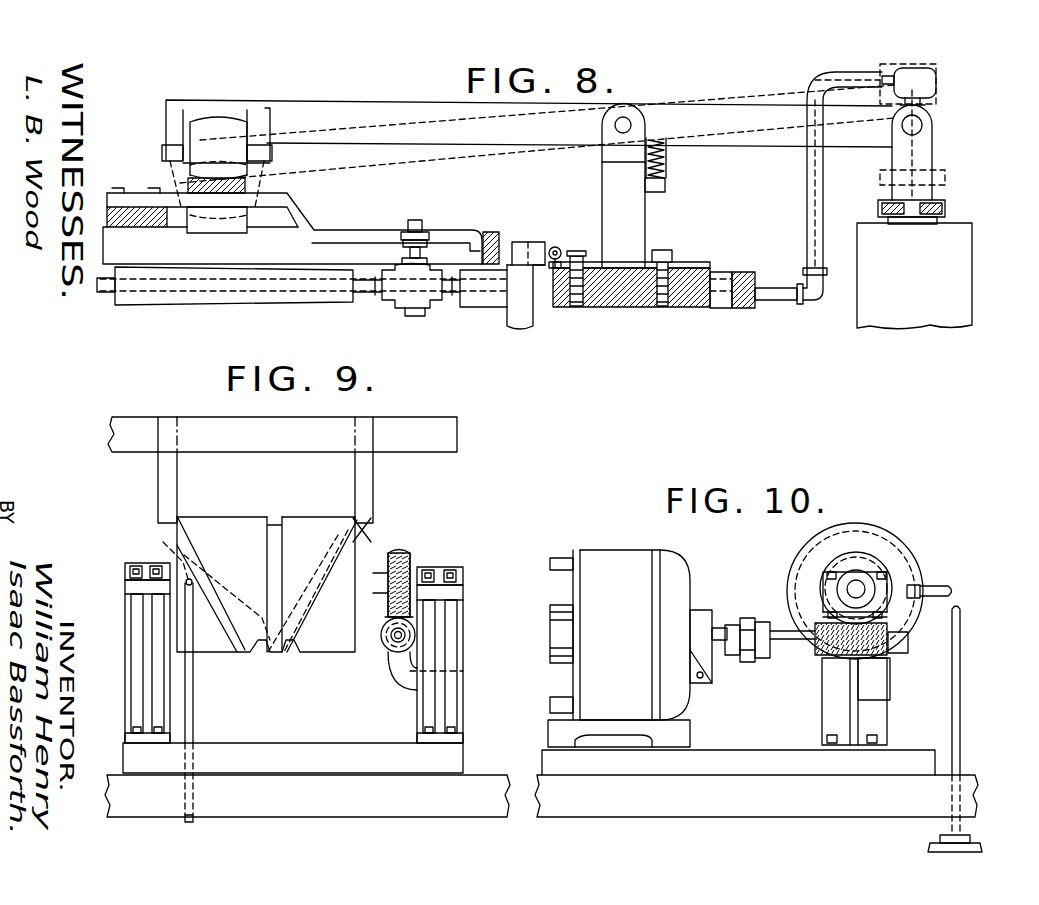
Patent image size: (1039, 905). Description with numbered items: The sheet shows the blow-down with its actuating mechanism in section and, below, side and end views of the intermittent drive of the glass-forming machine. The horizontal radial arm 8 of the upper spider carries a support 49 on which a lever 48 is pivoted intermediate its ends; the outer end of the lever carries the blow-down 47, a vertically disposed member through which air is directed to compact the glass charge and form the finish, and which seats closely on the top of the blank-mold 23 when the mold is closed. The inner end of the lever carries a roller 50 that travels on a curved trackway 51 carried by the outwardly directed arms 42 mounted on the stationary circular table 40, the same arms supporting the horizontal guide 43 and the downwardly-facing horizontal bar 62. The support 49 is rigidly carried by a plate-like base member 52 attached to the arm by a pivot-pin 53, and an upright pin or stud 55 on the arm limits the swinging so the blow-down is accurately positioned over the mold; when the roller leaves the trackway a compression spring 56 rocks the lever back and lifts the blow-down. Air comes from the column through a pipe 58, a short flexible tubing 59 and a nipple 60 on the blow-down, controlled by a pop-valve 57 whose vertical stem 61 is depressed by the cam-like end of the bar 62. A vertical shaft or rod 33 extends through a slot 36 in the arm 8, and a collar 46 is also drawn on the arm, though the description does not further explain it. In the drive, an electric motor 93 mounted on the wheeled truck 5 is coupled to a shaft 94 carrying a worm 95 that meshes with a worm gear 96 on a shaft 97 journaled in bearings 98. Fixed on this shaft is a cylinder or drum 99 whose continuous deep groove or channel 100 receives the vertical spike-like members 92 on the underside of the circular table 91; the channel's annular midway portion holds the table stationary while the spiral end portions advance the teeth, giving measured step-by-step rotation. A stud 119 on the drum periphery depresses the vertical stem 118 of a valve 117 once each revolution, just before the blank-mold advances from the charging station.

In FIG. 9, the wheeled truck 5 is at (500, 788).
In FIG. 8, the horizontal radial arm 8 is at (262, 303).
In FIG. 8, the blank-mold 23 is at (960, 281).
In FIG. 8, the vertical shaft or rod 33 is at (519, 327).
In FIG. 8, the slot 36 is at (556, 246).
In FIG. 8, the circular table 40 is at (134, 208).
In FIG. 8, the outwardly directed arms 42 is at (352, 232).
In FIG. 8, the horizontal guide 43 is at (491, 232).
In FIG. 8, the collar 46 is at (536, 246).
In FIG. 8, the blow-down 47 is at (933, 157).
In FIG. 8, the lever 48 is at (760, 138).
In FIG. 8, the support 49 is at (602, 184).
In FIG. 8, the roller 50 is at (192, 133).
In FIG. 8, the curved trackway 51 is at (248, 186).
In FIG. 8, the plate-like base member 52 is at (623, 308).
In FIG. 8, the pivot-pin 53 is at (690, 276).
In FIG. 8, the upright pin or stud 55 is at (577, 256).
In FIG. 8, the compression spring 56 is at (666, 169).
In FIG. 8, the valve 57 is at (396, 298).
In FIG. 8, the pipe 58 is at (772, 301).
In FIG. 8, the flexible tubing 59 is at (808, 197).
In FIG. 8, the nipple 60 is at (922, 86).
In FIG. 8, the vertical stem 61 is at (408, 250).
In FIG. 8, the horizontal bar 62 is at (418, 242).
In FIG. 9, the circular table 91 is at (457, 433).
In FIG. 9, the vertical spike-like members 92 is at (158, 481).
In FIG. 10, the electric motor 93 is at (614, 562).
In FIG. 9, the shaft 94 is at (390, 655).
In FIG. 10, the shaft 94 is at (776, 643).
In FIG. 9, the worm 95 is at (415, 641).
In FIG. 10, the worm 95 is at (825, 650).
In FIG. 9, the worm gear 96 is at (404, 553).
In FIG. 10, the worm gear 96 is at (872, 568).
In FIG. 9, the shaft 97 is at (412, 560).
In FIG. 10, the shaft 97 is at (847, 591).
In FIG. 9, the bearings 98 is at (146, 567).
In FIG. 10, the bearings 98 is at (820, 572).
In FIG. 9, the cylinder or drum 99 is at (313, 518).
In FIG. 10, the cylinder or drum 99 is at (878, 540).
In FIG. 9, the groove or channel 100 is at (272, 517).
In FIG. 10, the valve 117 is at (978, 848).
In FIG. 9, the vertical stem 118 is at (193, 712).
In FIG. 10, the vertical stem 118 is at (961, 727).
In FIG. 9, the arm or stud 119 is at (159, 555).
In FIG. 10, the arm or stud 119 is at (956, 590).